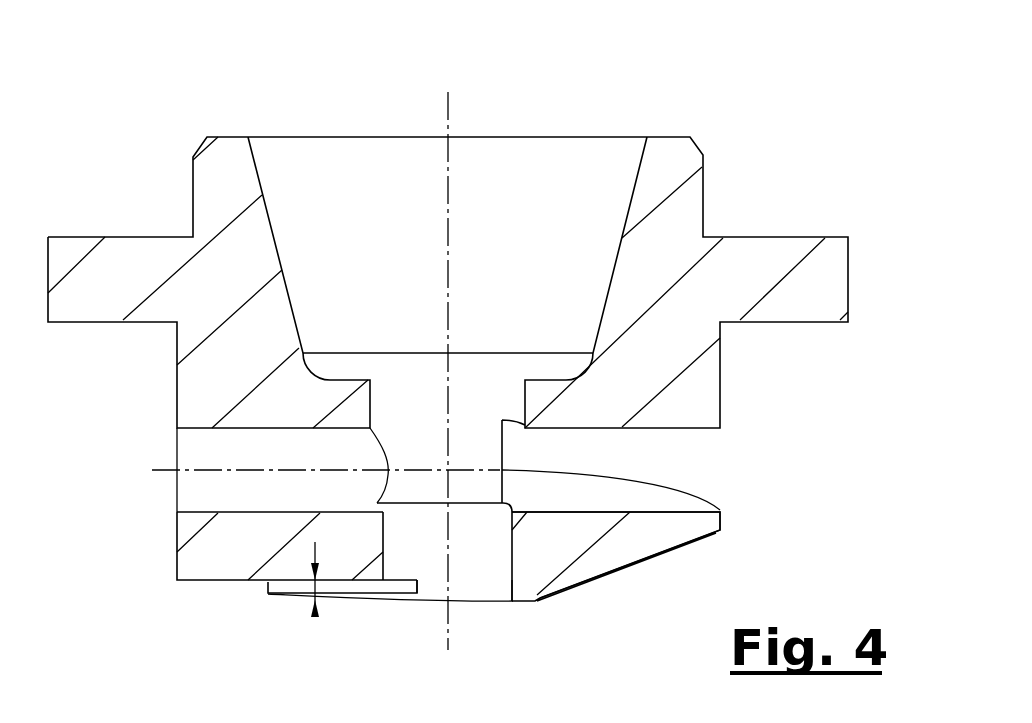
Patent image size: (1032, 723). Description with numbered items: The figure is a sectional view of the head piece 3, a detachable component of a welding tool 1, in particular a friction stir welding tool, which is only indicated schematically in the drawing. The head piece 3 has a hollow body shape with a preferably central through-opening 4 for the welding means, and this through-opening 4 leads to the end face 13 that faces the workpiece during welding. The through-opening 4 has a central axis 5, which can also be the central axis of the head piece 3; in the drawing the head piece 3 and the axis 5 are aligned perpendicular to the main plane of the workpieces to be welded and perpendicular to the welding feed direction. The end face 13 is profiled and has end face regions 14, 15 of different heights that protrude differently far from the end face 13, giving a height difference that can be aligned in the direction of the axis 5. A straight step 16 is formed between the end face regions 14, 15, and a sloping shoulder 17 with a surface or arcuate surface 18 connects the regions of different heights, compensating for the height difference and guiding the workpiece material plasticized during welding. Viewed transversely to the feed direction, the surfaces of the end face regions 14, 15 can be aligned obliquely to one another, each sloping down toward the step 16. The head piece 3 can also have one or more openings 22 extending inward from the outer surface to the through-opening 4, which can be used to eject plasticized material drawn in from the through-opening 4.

The welding tool 1 is at (446, 382).
The head piece 3 is at (125, 265).
The through-opening 4 is at (492, 538).
The central axis 5 is at (450, 243).
The end face 13 is at (426, 617).
The end face region 14 is at (368, 600).
The end face region 15 is at (203, 585).
The step 16 is at (272, 598).
The sloping shoulder 17 is at (516, 600).
The arcuate surface 18 is at (516, 600).
The opening 22 is at (202, 452).